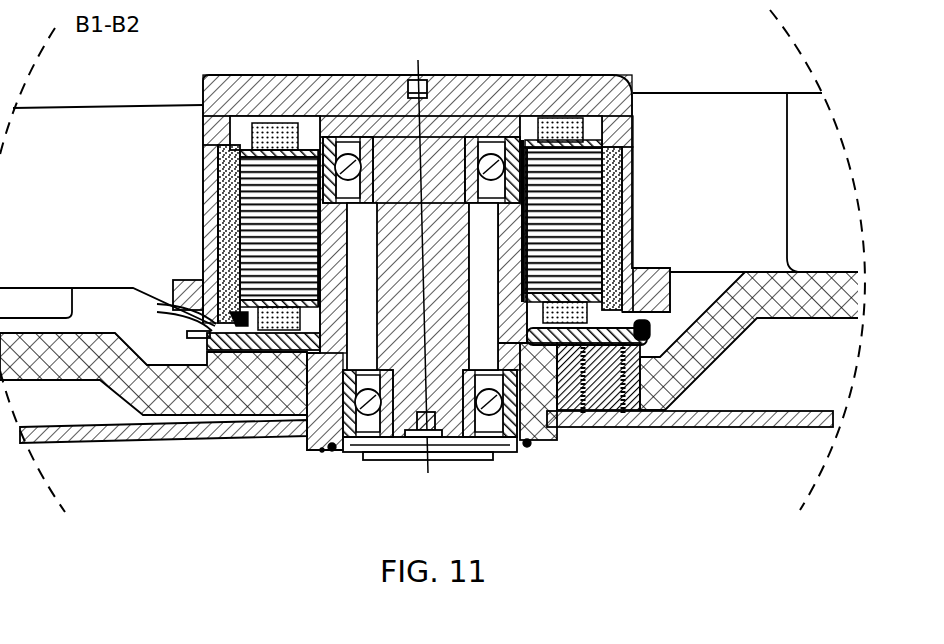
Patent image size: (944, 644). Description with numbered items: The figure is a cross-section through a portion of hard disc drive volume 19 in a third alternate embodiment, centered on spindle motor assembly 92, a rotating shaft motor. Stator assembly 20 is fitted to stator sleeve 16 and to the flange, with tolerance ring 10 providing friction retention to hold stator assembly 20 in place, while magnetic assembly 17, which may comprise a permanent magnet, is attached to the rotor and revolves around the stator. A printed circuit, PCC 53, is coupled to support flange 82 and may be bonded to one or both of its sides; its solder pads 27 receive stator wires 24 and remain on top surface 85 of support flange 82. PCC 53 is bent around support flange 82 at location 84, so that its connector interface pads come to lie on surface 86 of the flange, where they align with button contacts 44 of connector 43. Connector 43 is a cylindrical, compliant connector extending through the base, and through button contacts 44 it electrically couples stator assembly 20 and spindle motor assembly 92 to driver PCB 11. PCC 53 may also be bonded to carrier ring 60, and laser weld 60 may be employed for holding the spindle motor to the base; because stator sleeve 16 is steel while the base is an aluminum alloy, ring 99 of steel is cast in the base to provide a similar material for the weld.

The tolerance ring 10 is at (522, 253).
The driver PCB 11 is at (794, 402).
The stator sleeve 16 is at (352, 279).
The magnetic assembly 17 is at (222, 192).
The drive volume 19 is at (107, 215).
The stator assembly 20 is at (220, 143).
The stator wires 24 is at (220, 292).
The solder pads 27 is at (160, 305).
The connector 43 is at (610, 418).
The button contacts 44 is at (583, 412).
The PCC 53 is at (553, 433).
The laser weld 60 is at (337, 455).
The support flange 82 is at (276, 356).
The location 84 is at (660, 318).
The top surface 85 is at (196, 335).
The surface 86 is at (203, 354).
The spindle motor assembly 92 is at (633, 78).
The ring 99 is at (322, 452).